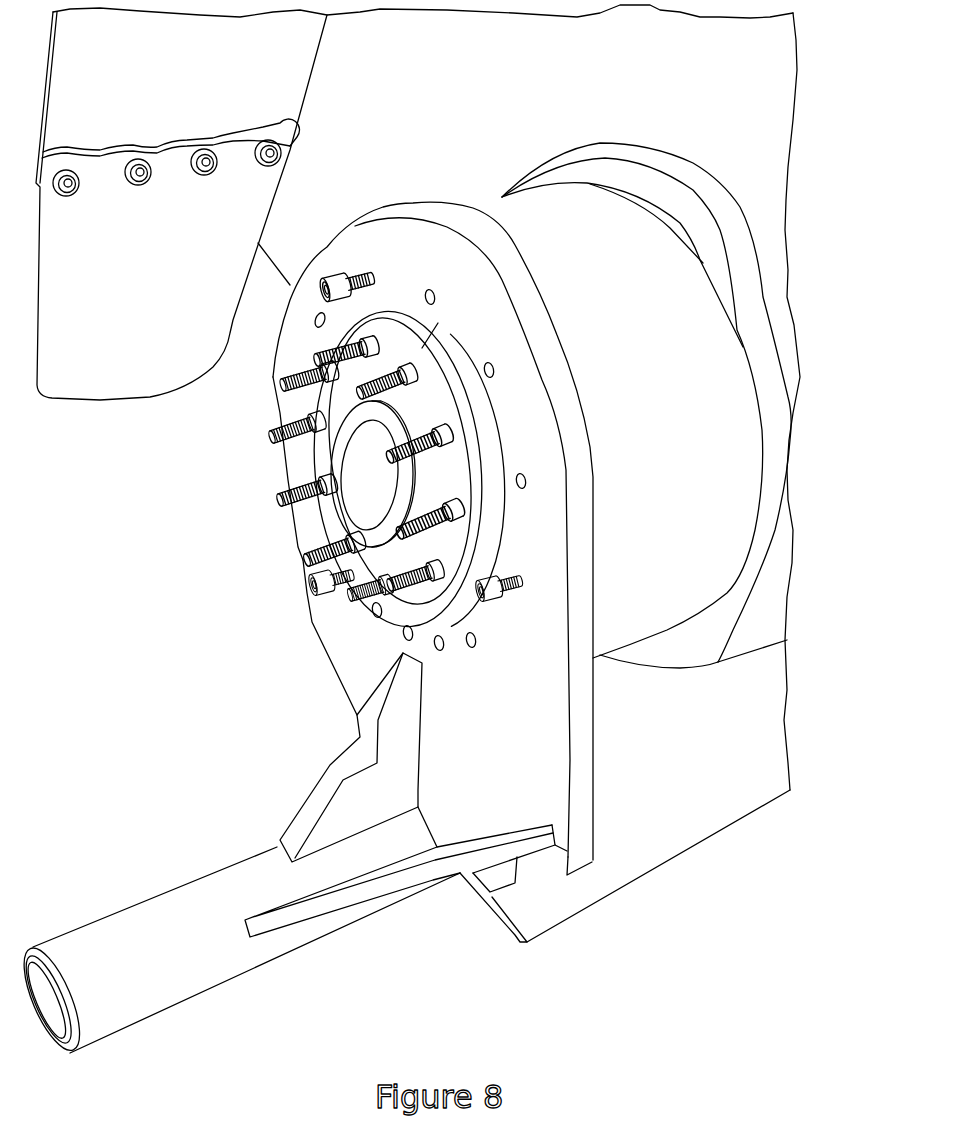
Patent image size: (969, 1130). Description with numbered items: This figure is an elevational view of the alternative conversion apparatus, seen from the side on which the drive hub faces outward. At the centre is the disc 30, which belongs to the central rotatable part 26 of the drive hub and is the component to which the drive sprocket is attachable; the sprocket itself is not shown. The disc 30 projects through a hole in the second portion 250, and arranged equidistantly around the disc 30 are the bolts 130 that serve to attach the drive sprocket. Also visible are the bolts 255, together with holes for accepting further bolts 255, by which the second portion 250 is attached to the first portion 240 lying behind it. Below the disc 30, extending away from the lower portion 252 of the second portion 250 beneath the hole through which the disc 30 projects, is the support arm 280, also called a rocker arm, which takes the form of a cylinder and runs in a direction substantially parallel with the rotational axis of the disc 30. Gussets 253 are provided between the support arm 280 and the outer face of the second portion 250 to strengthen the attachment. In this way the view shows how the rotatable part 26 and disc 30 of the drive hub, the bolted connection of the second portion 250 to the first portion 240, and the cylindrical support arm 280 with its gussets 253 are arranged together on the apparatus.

The second portion 250 is at (520, 332).
The lower portion 252 is at (347, 633).
The disc 30 is at (320, 452).
The rotatable part 26 is at (367, 493).
The bolts 255 is at (318, 291).
The bolts 130 is at (345, 595).
The gussets 253 is at (320, 803).
The first portion 240 is at (657, 467).
The support arm 280 is at (145, 983).